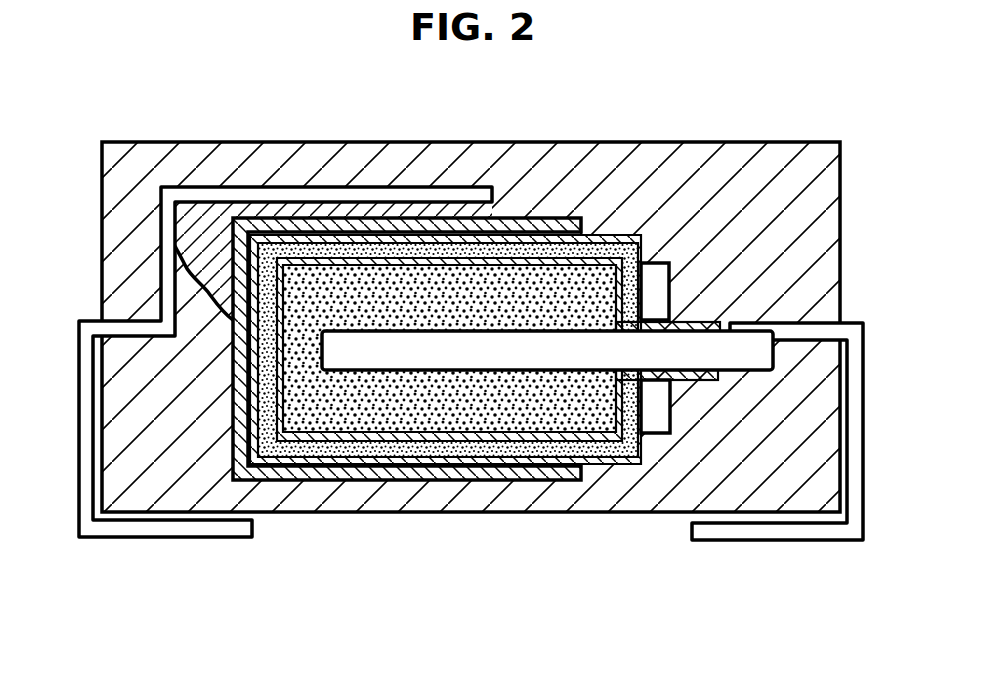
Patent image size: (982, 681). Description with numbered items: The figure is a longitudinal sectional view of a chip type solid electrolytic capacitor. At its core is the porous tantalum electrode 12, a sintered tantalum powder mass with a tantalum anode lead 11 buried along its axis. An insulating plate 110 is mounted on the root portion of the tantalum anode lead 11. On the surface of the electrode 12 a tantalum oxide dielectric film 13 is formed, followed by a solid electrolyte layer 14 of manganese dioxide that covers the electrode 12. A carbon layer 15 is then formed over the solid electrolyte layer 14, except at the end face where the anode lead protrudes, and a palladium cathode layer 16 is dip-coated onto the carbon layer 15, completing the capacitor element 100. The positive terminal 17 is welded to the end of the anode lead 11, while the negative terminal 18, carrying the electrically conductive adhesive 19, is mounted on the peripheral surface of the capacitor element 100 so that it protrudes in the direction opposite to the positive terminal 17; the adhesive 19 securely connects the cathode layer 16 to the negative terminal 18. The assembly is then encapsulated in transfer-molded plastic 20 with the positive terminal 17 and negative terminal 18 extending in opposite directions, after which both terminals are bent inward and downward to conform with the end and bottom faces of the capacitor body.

The tantalum anode lead 11 is at (742, 348).
The porous tantalum electrode 12 is at (395, 418).
The tantalum oxide dielectric film 13 is at (707, 330).
The solid electrolyte layer 14 is at (618, 240).
The carbon layer 15 is at (590, 234).
The cathode layer 16 is at (513, 220).
The positive terminal 17 is at (863, 540).
The negative terminal 18 is at (79, 537).
The electrically conductive adhesive 19 is at (194, 224).
The plastic 20 is at (600, 497).
The capacitor element 100 is at (477, 420).
The insulating plate 110 is at (653, 415).